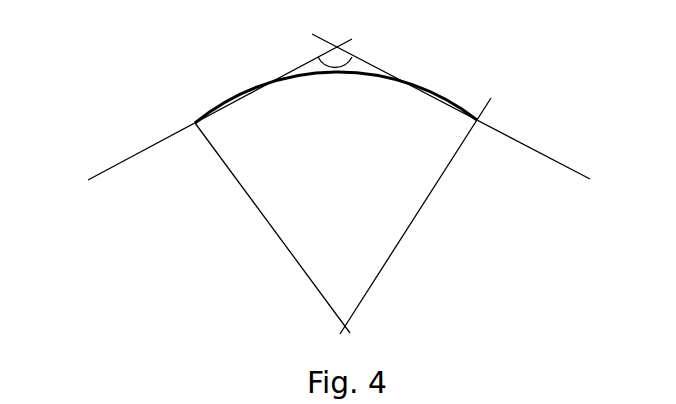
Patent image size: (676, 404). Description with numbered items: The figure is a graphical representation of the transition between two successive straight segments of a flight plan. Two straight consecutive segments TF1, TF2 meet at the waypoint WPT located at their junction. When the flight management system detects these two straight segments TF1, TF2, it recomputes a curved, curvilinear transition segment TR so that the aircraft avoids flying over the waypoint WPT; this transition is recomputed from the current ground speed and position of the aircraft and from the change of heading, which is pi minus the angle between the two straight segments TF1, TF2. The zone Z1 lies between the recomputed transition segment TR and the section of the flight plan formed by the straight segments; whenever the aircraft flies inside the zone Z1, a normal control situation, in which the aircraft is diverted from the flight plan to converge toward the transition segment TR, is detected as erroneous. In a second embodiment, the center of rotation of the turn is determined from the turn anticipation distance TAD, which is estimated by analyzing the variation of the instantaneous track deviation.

The straight segment TF1 is at (200, 117).
The straight segment TF2 is at (472, 115).
The turn anticipation distance TAD is at (195, 123).
The zone Z1 is at (305, 68).
The curved transition segment TR is at (360, 72).
The waypoint WPT is at (332, 34).